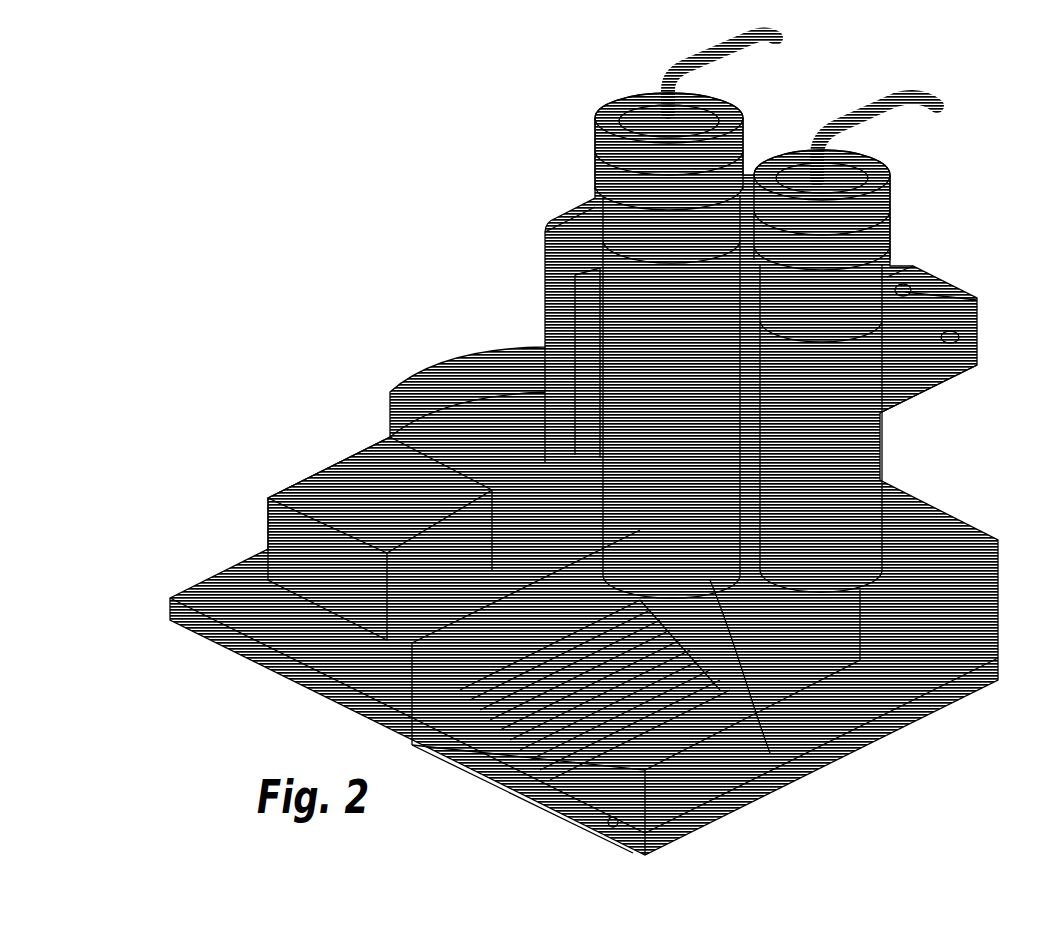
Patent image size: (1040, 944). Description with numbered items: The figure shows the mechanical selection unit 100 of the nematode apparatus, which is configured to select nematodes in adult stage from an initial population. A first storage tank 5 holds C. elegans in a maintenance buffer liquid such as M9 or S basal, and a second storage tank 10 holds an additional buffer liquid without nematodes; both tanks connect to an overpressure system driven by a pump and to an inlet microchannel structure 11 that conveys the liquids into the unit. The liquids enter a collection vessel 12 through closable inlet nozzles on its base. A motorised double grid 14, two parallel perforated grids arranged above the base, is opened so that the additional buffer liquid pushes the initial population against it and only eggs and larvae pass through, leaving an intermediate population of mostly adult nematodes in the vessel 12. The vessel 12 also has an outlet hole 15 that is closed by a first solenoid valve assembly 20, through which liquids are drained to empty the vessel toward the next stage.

The mechanical selection unit 100 is at (400, 202).
The first storage tank 5 is at (737, 117).
The second storage tank 10 is at (888, 222).
The first solenoid valve assembly 20 is at (310, 473).
The inlet microchannel structure 11 is at (763, 645).
The collection vessel 12 is at (813, 727).
The double grid 14 is at (685, 720).
The outlet hole 15 is at (600, 825).